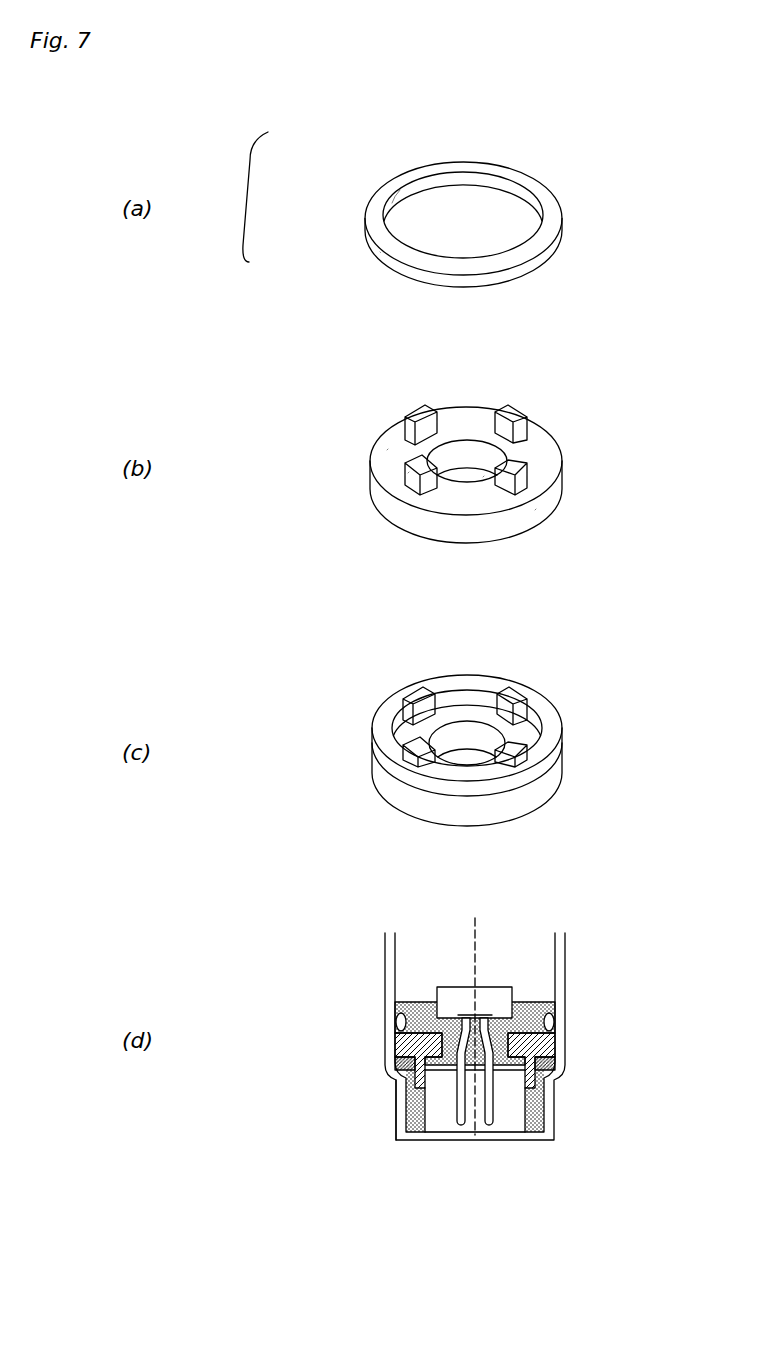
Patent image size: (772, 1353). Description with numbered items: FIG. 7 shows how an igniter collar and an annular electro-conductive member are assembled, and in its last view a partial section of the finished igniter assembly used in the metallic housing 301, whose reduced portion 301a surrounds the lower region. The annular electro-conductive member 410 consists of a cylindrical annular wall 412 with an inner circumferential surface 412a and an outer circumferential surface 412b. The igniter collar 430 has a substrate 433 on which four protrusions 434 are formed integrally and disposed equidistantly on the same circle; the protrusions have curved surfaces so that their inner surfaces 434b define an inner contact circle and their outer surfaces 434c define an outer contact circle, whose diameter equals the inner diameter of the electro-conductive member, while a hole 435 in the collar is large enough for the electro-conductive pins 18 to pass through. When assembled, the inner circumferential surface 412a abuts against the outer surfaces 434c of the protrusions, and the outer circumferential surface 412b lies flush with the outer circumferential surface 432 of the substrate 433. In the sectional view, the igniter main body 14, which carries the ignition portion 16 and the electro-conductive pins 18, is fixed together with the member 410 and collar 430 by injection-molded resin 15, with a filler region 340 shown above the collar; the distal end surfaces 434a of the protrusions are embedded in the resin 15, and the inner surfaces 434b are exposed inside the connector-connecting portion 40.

The igniter main body 14 is at (501, 969).
The resin 15 is at (422, 1003).
The ignition portion 16 is at (474, 1002).
The electro-conductive pins 18 is at (460, 1132).
The connector-connecting portion 40 is at (438, 1123).
The metallic housing 301 is at (565, 952).
The reduced diameter portion of casing 301a is at (390, 1082).
The potting filler 340 is at (557, 1027).
The annular electro-conductive member 410 is at (560, 247).
The cylindrical annular wall 412 is at (230, 197).
The inner circumferential surface 412a is at (392, 203).
The outer circumferential surface 412b is at (380, 252).
The igniter collar 430 is at (393, 533).
The outer circumferential surface 432 is at (535, 510).
The substrate 433 is at (387, 450).
The protrusions 434 is at (436, 400).
The distal end surfaces 434a is at (527, 393).
The inner surfaces 434b is at (528, 426).
The outer surfaces 434c is at (406, 473).
The hole 435 is at (483, 477).